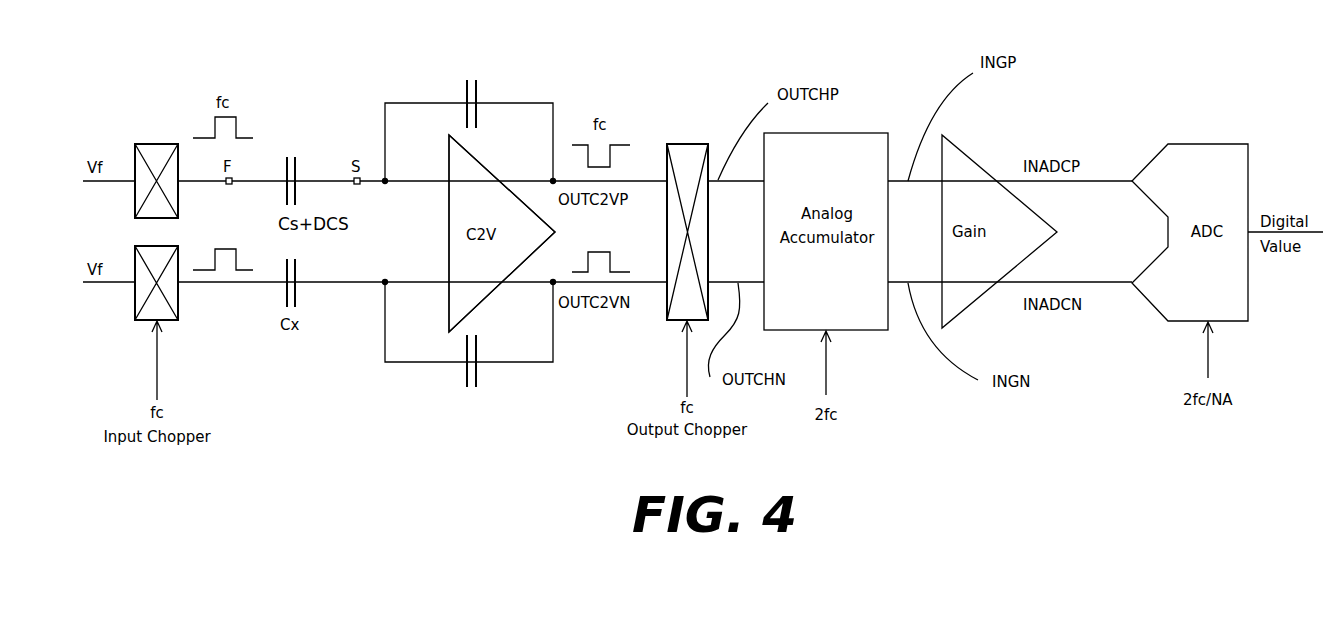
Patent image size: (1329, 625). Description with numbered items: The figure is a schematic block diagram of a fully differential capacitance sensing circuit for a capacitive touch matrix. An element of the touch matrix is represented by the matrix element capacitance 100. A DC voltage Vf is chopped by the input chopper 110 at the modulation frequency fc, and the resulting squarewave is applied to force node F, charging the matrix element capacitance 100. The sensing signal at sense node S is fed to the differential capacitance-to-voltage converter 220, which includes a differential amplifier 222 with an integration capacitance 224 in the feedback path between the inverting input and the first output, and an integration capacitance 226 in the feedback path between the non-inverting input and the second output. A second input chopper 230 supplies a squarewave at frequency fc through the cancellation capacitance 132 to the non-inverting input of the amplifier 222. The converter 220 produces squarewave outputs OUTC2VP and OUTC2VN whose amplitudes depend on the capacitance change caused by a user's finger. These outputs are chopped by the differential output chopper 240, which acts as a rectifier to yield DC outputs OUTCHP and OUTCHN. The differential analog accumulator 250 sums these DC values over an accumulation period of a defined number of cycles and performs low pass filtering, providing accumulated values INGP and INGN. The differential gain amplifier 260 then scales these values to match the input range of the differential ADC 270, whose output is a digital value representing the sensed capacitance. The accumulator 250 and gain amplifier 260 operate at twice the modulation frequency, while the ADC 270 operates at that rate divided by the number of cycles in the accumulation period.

The input chopper 110 is at (173, 145).
The input chopper 230 is at (152, 323).
The matrix element capacitance 100 is at (300, 170).
The cancellation capacitance 132 is at (283, 298).
The differential capacitance-to-voltage converter 220 is at (535, 91).
The differential amplifier 222 is at (487, 297).
The integration capacitance 224 is at (463, 88).
The integration capacitance 226 is at (462, 380).
The differential output chopper 240 is at (673, 145).
The differential analog accumulator 250 is at (855, 132).
The differential gain amplifier 260 is at (973, 158).
The differential ADC 270 is at (1193, 144).